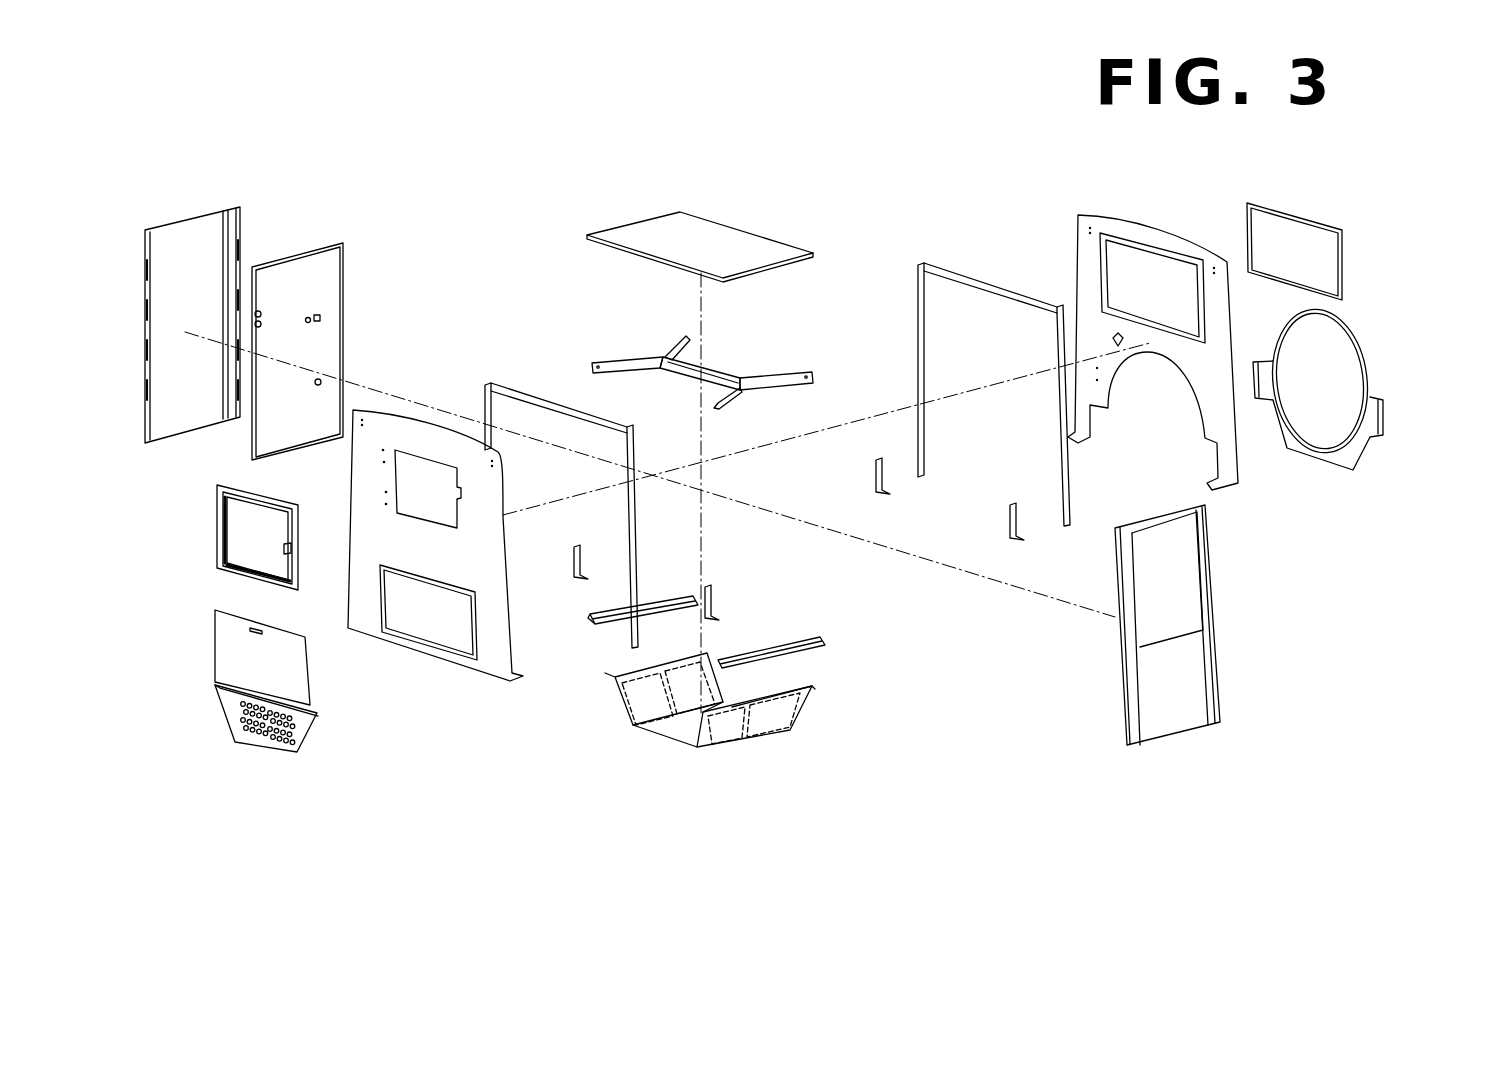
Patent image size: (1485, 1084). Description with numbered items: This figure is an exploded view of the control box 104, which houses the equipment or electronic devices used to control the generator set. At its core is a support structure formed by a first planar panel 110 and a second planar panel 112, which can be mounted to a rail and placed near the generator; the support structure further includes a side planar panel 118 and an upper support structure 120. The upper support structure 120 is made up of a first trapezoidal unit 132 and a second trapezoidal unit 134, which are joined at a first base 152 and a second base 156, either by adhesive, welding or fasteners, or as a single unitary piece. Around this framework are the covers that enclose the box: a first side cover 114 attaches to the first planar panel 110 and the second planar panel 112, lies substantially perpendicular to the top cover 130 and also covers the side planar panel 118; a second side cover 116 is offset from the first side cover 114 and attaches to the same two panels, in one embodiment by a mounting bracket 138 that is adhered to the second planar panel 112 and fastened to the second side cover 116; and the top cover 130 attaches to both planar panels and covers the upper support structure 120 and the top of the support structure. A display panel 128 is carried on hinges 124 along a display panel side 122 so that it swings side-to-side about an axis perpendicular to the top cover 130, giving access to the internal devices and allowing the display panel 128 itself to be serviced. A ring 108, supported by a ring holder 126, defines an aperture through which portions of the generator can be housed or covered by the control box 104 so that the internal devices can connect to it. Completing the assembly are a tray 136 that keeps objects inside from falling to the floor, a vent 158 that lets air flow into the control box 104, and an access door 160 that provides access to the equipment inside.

The control box 104 is at (836, 210).
The ring 108 is at (1363, 364).
The first planar panel 110 is at (348, 503).
The second planar panel 112 is at (1168, 235).
The first side cover 114 is at (212, 207).
The second side cover 116 is at (1167, 738).
The side planar panel 118 is at (305, 243).
The upper support structure 120 is at (805, 372).
The display panel side 122 is at (215, 525).
The hinges 124 is at (215, 500).
The ring holder 126 is at (1348, 460).
The display panel 128 is at (230, 572).
The top cover 130 is at (722, 222).
The first trapezoidal unit 132 is at (755, 375).
The second trapezoidal unit 134 is at (628, 362).
The tray 136 is at (777, 727).
The mounting bracket 138 is at (1060, 420).
The first base 152 is at (706, 367).
The second base 156 is at (672, 372).
The vent 158 is at (240, 728).
The access door 160 is at (218, 645).